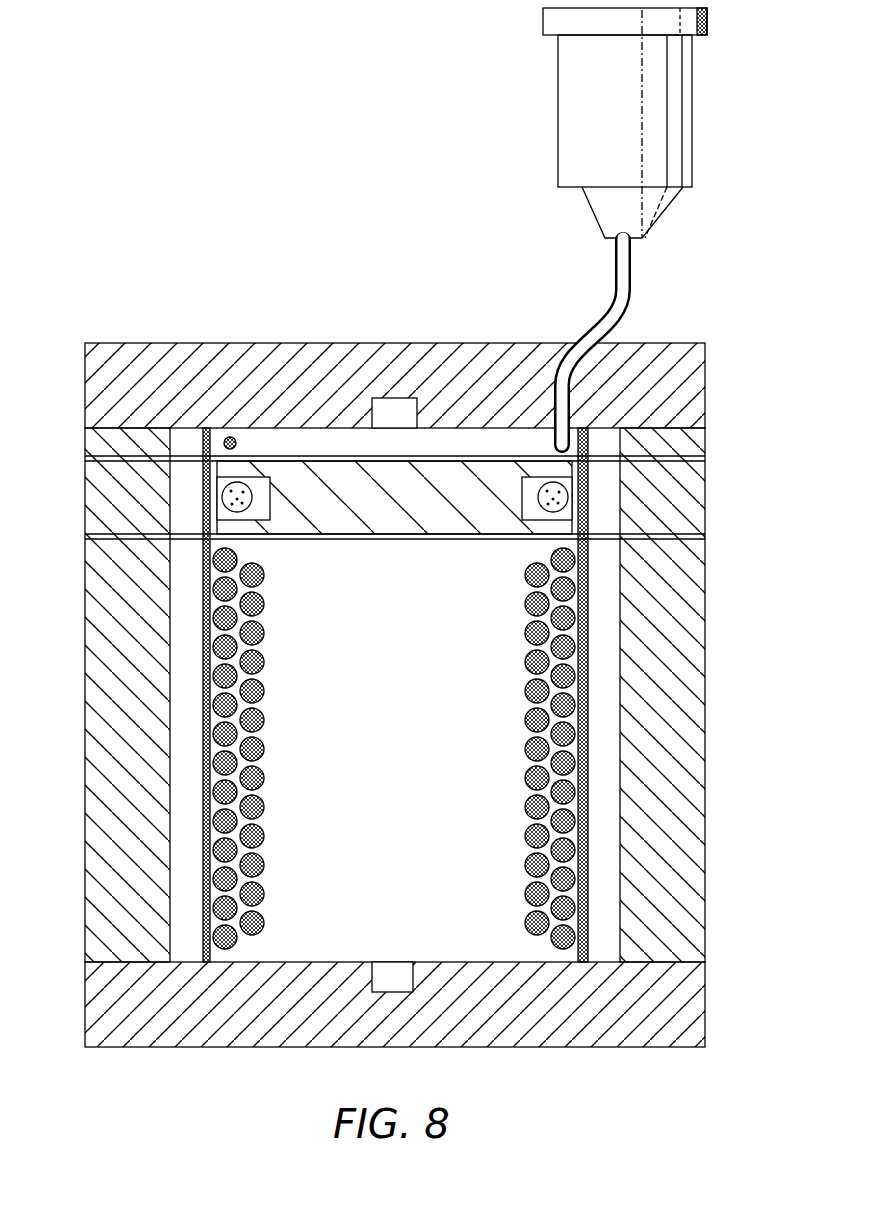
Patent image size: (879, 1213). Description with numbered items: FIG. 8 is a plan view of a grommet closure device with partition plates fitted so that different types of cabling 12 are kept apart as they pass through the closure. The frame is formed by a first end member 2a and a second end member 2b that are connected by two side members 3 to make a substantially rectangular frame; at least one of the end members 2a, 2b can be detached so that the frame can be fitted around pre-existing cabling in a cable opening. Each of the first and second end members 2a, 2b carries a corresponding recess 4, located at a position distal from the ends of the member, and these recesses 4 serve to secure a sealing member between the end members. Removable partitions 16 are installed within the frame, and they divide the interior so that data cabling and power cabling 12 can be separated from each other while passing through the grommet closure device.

The first end member 2a is at (103, 343).
The second end member 2b is at (100, 1049).
The side member 3 is at (85, 741).
The recess 4 is at (395, 412).
The cabling 12 is at (635, 268).
The partition 16 is at (705, 456).